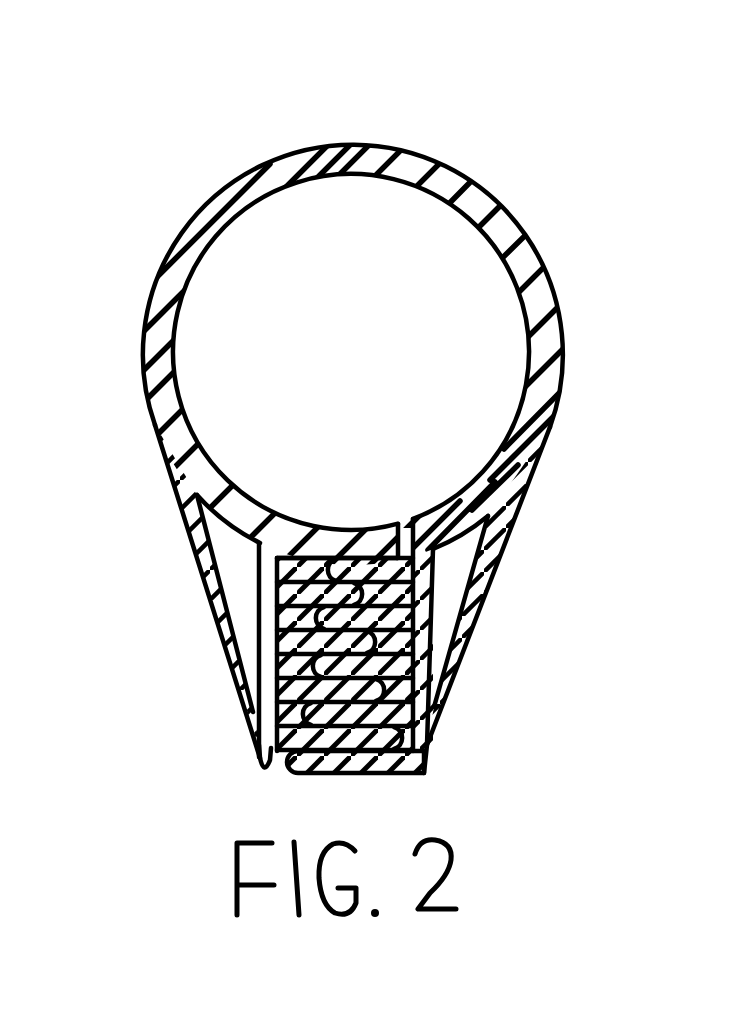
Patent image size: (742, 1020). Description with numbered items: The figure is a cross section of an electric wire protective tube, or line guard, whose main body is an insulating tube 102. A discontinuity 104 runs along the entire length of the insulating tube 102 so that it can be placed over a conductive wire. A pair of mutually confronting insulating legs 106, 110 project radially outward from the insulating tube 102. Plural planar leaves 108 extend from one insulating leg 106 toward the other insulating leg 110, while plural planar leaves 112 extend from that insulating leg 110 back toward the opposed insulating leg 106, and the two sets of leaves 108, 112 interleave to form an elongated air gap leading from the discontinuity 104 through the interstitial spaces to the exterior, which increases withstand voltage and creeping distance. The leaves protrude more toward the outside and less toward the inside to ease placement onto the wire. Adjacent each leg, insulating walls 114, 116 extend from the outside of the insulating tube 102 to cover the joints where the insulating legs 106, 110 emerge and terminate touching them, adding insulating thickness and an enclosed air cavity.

The insulating tube 102 is at (457, 169).
The discontinuity 104 is at (405, 531).
The insulating leg 106 is at (432, 738).
The planar leaves 108 is at (383, 773).
The insulating leg 110 is at (262, 740).
The planar leaves 112 is at (280, 766).
The insulating wall 114 is at (440, 618).
The insulating wall 116 is at (248, 626).